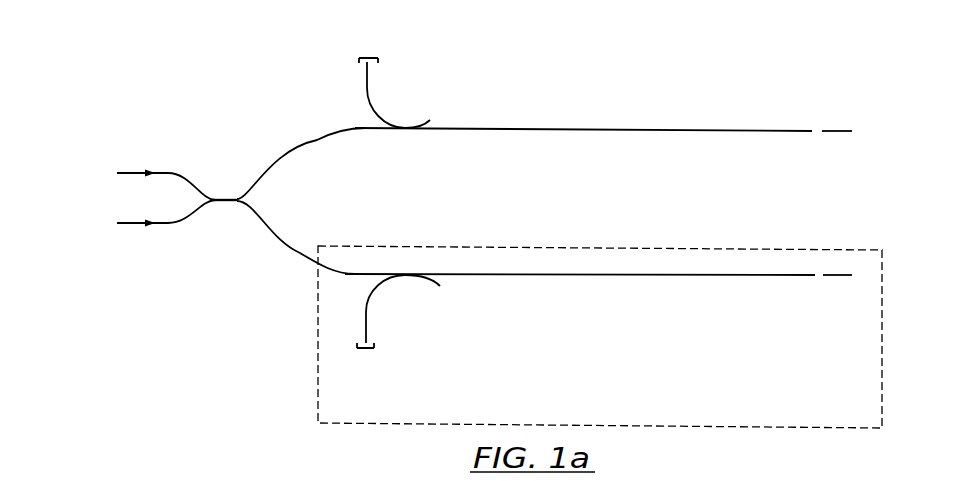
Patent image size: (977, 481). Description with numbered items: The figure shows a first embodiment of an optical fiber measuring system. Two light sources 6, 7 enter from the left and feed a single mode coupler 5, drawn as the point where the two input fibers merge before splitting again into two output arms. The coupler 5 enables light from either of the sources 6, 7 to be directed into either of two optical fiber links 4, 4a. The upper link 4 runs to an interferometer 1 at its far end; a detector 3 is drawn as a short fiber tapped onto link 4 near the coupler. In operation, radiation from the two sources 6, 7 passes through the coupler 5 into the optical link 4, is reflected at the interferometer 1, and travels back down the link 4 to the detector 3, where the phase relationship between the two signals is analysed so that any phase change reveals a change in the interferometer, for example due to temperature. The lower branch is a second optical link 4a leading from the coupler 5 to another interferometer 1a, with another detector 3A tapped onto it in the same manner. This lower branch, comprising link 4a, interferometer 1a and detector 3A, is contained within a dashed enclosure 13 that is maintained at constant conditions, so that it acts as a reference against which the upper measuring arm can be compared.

The interferometer 1 is at (833, 130).
The interferometer 1a is at (828, 277).
The detector 3 is at (375, 58).
The detector 3A is at (364, 352).
The optical fiber link 4 is at (587, 130).
The optical fiber link 4a is at (592, 281).
The single mode coupler 5 is at (216, 196).
The light source 6 is at (109, 169).
The light source 7 is at (109, 218).
The enclosure 13 is at (884, 309).